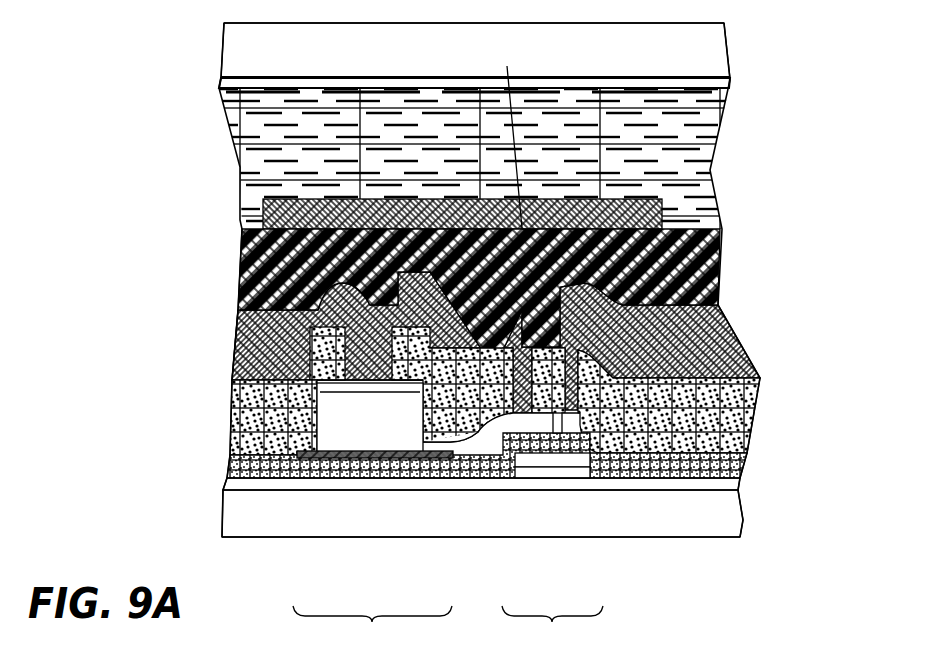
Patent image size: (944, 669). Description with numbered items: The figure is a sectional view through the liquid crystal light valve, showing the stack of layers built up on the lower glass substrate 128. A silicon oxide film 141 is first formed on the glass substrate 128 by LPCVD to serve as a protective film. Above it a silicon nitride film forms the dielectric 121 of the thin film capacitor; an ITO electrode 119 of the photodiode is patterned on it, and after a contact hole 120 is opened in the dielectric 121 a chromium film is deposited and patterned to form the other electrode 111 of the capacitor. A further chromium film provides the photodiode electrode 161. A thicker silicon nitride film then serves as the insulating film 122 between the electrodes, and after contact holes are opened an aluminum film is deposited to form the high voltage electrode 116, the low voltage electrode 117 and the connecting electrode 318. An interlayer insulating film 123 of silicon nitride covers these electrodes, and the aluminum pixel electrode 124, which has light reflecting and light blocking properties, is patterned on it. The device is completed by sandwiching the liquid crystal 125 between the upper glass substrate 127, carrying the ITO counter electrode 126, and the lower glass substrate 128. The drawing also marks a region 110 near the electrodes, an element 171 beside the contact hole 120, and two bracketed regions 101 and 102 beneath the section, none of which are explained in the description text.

The glass substrate 127 is at (702, 52).
The counter electrode 126 is at (718, 82).
The liquid crystal 125 is at (687, 135).
The pixel electrode 124 is at (647, 212).
The interlayer insulating film 123 is at (698, 288).
The low voltage electrode 117 is at (707, 358).
The high voltage electrode 116 is at (248, 332).
The insulating film 122 is at (707, 417).
The photodiode electrode 161 is at (320, 378).
The thin film transistor region 110 is at (358, 437).
The dielectric 121 is at (757, 462).
The silicon oxide film 141 is at (725, 487).
The glass substrate 128 is at (692, 523).
The electrode of the capacitor 111 is at (485, 450).
The electrode of the photodiode 119 is at (302, 452).
The contact hole 120 is at (540, 413).
The gate line 171 is at (573, 458).
The connecting electrode 318 is at (507, 66).
The transistor region 101 is at (372, 632).
The gate region 102 is at (552, 632).